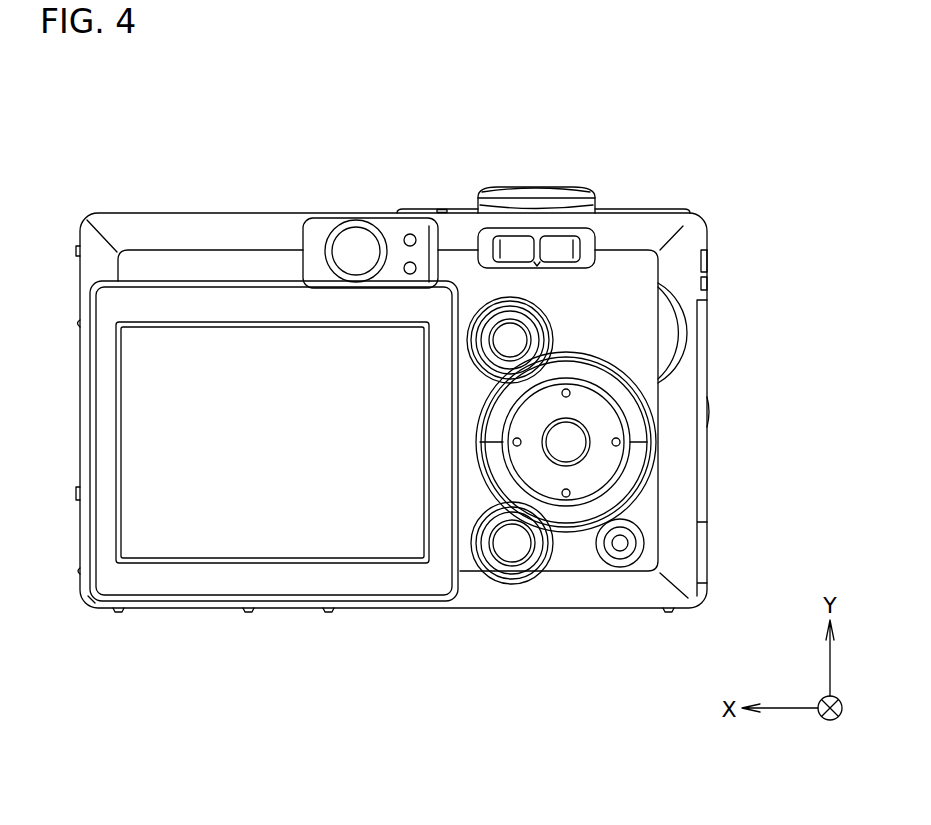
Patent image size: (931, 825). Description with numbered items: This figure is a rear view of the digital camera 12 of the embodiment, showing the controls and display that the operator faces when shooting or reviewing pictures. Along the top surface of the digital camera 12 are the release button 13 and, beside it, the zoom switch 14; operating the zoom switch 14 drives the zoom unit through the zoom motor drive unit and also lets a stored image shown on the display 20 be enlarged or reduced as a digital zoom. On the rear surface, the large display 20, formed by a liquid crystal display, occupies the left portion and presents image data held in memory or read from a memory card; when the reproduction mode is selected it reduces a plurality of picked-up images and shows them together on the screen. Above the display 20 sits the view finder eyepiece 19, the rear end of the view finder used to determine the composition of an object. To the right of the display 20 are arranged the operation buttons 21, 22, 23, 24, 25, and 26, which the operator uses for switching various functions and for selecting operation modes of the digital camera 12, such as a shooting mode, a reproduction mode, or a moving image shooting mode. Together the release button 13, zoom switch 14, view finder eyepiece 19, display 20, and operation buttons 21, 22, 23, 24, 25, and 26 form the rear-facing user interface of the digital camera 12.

The digital camera 12 is at (207, 232).
The release button 13 is at (538, 187).
The zoom switch 14 is at (558, 207).
The view finder eyepiece 19 is at (357, 252).
The display 20 is at (210, 530).
The operation button 21 is at (560, 250).
The operation button 22 is at (512, 340).
The operation button 23 is at (566, 442).
The operation button 24 is at (512, 543).
The operation button 25 is at (620, 543).
The operation button 26 is at (608, 465).